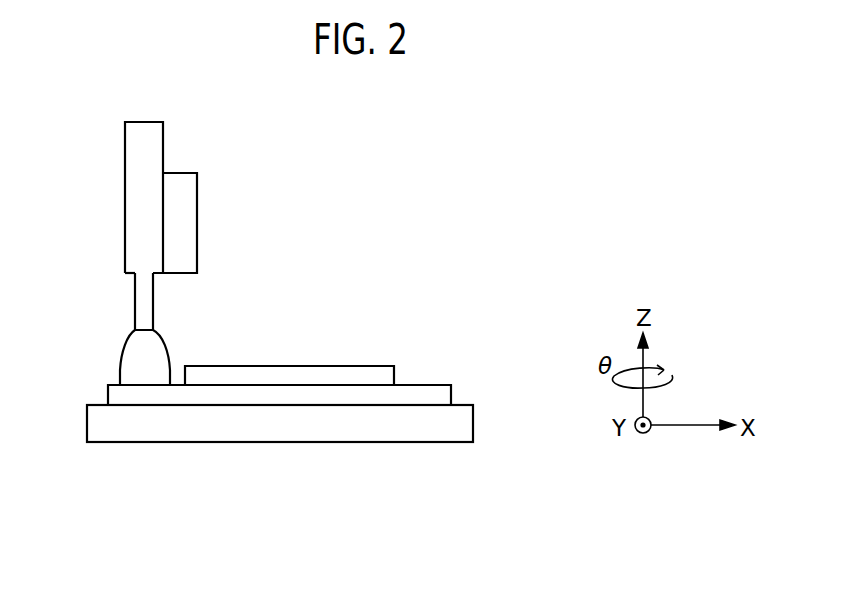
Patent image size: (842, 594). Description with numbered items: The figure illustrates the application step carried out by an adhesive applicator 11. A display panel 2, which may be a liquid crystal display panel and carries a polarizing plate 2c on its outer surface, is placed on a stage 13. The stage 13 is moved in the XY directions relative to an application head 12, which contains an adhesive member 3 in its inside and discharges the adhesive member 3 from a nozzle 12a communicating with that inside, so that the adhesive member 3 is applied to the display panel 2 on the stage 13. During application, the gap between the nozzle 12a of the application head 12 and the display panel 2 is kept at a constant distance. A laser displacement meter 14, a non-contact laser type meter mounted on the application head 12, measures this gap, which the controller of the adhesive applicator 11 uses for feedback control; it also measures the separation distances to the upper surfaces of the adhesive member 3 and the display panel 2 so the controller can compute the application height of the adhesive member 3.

The adhesive applicator 11 is at (454, 176).
The application head 12 is at (125, 170).
The nozzle 12a is at (135, 301).
The laser displacement meter 14 is at (193, 202).
The adhesive member 3 is at (123, 359).
The display panel 2 is at (434, 388).
The polarizing plate 2c is at (301, 367).
The stage 13 is at (472, 423).